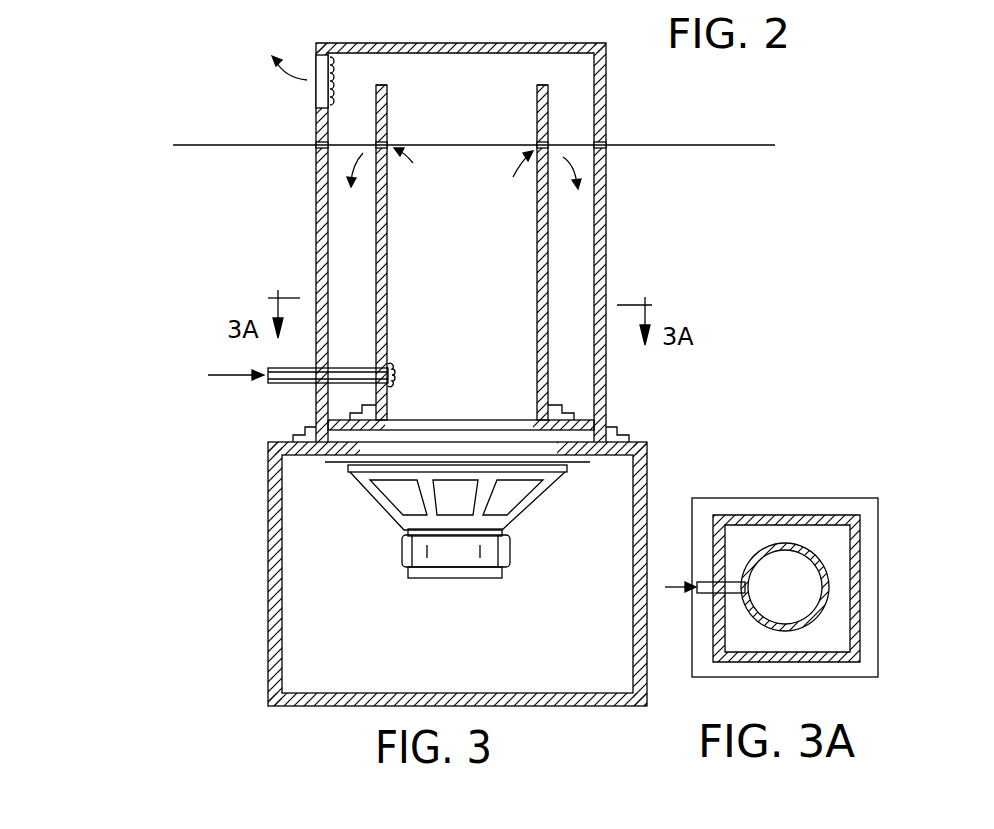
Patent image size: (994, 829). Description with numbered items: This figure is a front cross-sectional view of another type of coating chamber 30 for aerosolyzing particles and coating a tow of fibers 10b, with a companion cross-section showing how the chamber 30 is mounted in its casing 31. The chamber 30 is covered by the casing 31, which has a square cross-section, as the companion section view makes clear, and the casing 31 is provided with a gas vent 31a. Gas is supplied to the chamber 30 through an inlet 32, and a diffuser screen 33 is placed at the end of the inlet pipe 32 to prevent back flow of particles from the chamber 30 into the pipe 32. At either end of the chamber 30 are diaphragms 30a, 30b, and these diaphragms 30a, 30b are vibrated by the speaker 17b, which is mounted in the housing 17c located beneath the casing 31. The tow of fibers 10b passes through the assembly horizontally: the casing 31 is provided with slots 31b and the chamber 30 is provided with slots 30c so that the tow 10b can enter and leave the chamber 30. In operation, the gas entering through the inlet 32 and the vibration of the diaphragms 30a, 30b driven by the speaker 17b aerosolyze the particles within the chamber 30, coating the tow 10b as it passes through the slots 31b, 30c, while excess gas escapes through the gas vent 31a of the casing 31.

In FIG. 3, the tow of fibers 10b is at (222, 144).
In FIG. 3, the speaker 17b is at (525, 507).
In FIG. 3, the housing 17c is at (305, 700).
In FIG. 3, the coating chamber 30 is at (548, 264).
In FIG. 3A, the coating chamber 30 is at (793, 540).
In FIG. 3, the diaphragm 30a is at (467, 87).
In FIG. 3, the diaphragm 30b is at (437, 420).
In FIG. 3, the slots 30c is at (377, 143).
In FIG. 3, the casing 31 is at (316, 270).
In FIG. 3A, the casing 31 is at (740, 517).
In FIG. 3, the gas vent 31a is at (338, 88).
In FIG. 3, the slots 31b is at (317, 146).
In FIG. 3, the inlet 32 is at (281, 384).
In FIG. 3A, the inlet 32 is at (703, 600).
In FIG. 3, the diffuser screen 33 is at (390, 378).